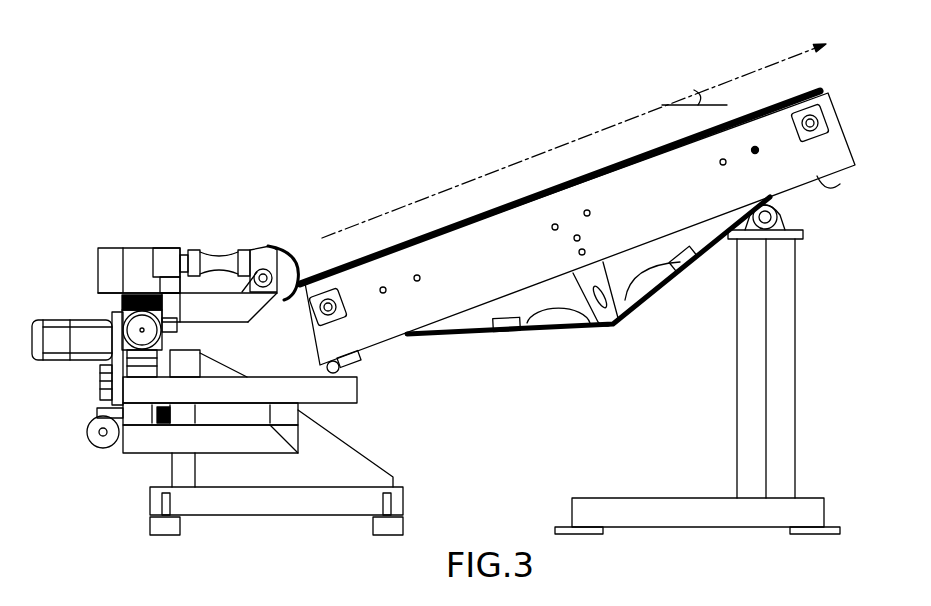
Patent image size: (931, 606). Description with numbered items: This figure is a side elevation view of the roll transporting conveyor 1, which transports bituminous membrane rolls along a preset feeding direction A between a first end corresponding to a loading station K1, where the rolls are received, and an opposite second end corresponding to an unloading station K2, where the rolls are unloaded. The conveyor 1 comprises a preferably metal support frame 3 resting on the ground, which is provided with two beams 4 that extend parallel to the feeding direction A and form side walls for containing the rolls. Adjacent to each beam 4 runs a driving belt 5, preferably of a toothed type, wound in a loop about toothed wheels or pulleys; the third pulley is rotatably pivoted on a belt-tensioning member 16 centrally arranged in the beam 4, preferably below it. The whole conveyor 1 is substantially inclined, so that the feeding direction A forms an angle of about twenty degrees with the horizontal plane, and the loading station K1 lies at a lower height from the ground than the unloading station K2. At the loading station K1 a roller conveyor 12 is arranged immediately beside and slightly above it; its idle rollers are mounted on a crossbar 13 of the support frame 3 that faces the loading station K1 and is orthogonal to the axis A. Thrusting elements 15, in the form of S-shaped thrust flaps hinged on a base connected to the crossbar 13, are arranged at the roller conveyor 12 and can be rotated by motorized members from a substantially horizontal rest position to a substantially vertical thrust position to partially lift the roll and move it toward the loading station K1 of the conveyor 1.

The roll transporting conveyor 1 is at (580, 210).
The support frame 3 is at (375, 436).
The beam 4 is at (783, 175).
The driving belt 5 is at (493, 207).
The roller conveyor 12 is at (212, 238).
The crossbar 13 is at (138, 257).
The thrusting element 15 is at (277, 241).
The belt-tensioning member 16 is at (599, 350).
The loading station K1 is at (313, 262).
The unloading station K2 is at (816, 77).
The feeding direction A is at (777, 62).